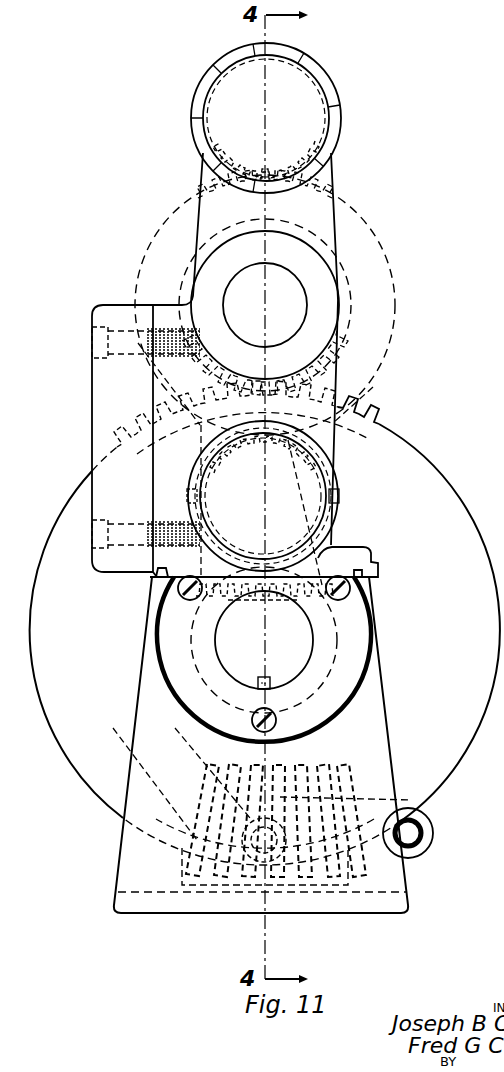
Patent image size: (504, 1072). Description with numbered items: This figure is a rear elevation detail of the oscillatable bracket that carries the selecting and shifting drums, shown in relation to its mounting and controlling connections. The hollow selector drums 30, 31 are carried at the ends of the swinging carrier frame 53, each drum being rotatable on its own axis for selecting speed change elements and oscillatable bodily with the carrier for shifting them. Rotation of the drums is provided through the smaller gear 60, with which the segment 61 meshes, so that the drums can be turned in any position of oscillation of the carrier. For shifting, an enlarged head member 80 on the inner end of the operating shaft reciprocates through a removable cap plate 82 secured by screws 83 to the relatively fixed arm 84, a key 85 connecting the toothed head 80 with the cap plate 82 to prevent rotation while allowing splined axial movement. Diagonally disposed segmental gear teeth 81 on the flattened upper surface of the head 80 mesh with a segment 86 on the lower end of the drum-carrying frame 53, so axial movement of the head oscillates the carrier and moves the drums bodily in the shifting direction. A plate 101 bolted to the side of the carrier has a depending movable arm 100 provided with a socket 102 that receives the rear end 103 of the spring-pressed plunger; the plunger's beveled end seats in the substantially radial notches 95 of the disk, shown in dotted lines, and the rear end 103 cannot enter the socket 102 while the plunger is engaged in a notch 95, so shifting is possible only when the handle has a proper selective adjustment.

The selector drum 30 is at (336, 86).
The carrier frame 53 is at (333, 211).
The smaller gear 60 is at (323, 368).
The segment 61 is at (363, 412).
The plate 101 is at (93, 432).
The selector drum 31 is at (333, 518).
The segment 86 is at (370, 556).
The screws 83 is at (185, 596).
The segmental gear teeth 81 is at (252, 598).
The head member 80 is at (303, 637).
The cap plate 82 is at (362, 648).
The key 85 is at (256, 684).
The fixed arm 84 is at (380, 718).
The radial notches 95 is at (360, 783).
The movable arm 100 is at (430, 828).
The socket 102 is at (413, 851).
The rear end of plunger 103 is at (278, 862).